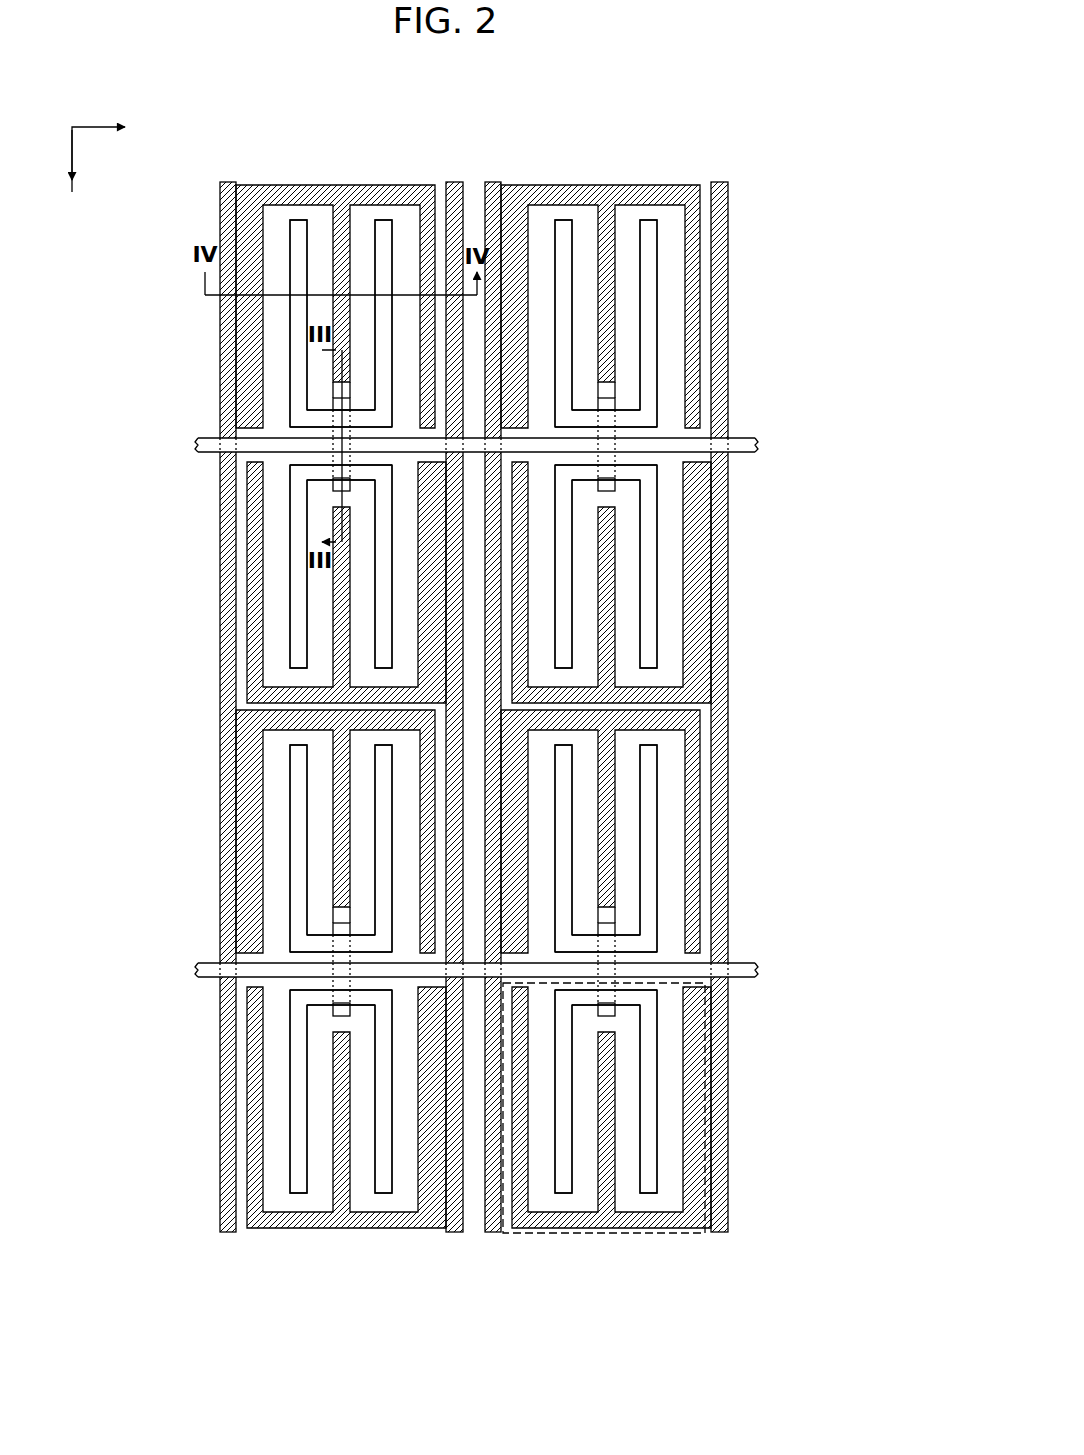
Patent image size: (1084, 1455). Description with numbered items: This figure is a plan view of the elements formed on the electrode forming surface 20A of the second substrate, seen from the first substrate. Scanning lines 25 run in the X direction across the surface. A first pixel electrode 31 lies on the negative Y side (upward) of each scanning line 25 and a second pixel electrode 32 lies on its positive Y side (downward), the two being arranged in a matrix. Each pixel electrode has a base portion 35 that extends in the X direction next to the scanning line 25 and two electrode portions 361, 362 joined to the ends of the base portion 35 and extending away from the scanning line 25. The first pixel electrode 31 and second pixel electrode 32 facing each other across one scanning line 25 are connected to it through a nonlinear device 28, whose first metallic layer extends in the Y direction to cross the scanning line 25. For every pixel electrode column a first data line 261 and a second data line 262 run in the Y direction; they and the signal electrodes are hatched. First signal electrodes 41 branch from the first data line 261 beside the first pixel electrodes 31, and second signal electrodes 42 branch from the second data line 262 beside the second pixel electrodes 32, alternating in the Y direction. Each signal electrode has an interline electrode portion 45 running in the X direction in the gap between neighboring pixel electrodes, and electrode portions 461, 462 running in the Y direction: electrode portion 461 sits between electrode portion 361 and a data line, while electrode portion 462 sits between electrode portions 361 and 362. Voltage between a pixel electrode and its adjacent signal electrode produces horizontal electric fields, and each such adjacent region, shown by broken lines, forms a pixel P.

The electrode forming surface 20A is at (786, 1309).
The scanning line 25 is at (756, 441).
The first data line 261 is at (230, 182).
The second data line 262 is at (455, 182).
The nonlinear device 28 is at (328, 398).
The first pixel electrode 31 is at (284, 318).
The second pixel electrode 32 is at (284, 562).
The base portion 35 is at (300, 420).
The electrode portion 361 is at (383, 228).
The electrode portion 362 is at (297, 232).
The first signal electrode 41 is at (320, 182).
The second signal electrode 42 is at (236, 522).
The interline electrode portion 45 is at (292, 184).
The electrode portion 461 is at (423, 240).
The electrode portion 462 is at (338, 232).
The pixel P is at (538, 1244).